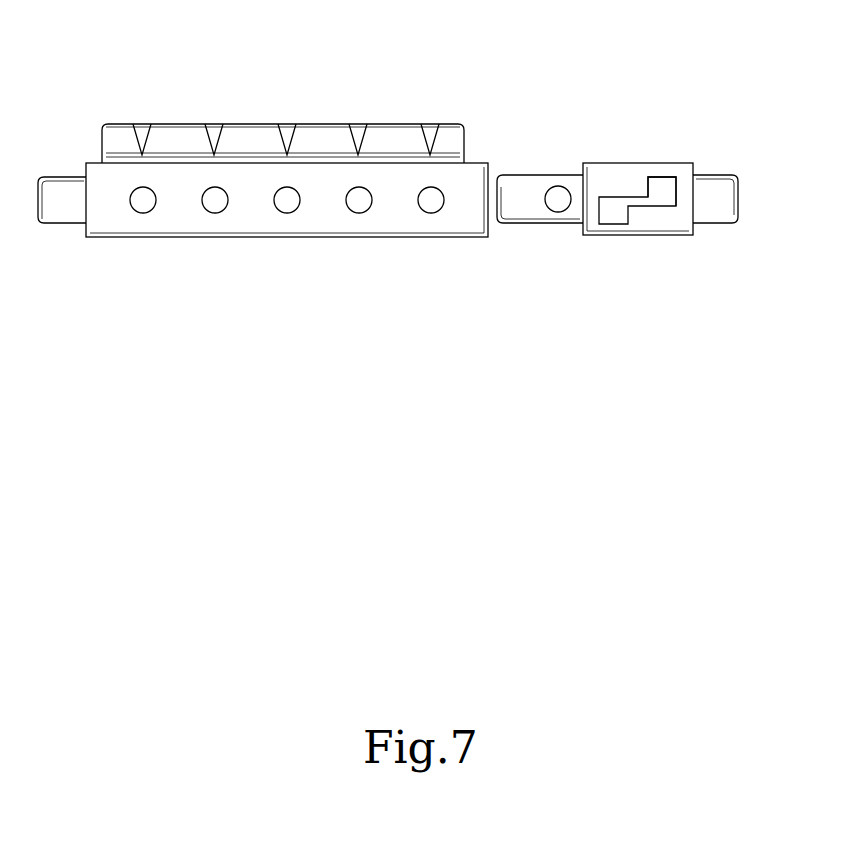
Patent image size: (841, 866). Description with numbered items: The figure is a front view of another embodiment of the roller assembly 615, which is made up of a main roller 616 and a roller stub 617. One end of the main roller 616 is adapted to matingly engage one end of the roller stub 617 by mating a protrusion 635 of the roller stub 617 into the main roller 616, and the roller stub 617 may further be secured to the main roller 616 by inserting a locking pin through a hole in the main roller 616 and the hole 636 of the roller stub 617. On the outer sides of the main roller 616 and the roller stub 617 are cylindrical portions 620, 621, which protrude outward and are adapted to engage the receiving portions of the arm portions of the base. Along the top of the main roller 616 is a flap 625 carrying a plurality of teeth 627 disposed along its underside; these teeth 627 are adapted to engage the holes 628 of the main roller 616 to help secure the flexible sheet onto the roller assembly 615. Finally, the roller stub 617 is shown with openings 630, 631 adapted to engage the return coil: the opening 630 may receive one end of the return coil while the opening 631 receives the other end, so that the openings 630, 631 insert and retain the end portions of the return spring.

The roller assembly 615 is at (132, 54).
The main roller 616 is at (264, 222).
The roller stub 617 is at (667, 226).
The cylindrical portion 620 is at (52, 179).
The cylindrical portion 621 is at (741, 214).
The flap 625 is at (324, 134).
The teeth 627 is at (249, 112).
The holes 628 is at (317, 235).
The opening 630 is at (637, 230).
The opening 631 is at (685, 160).
The protrusion 635 is at (538, 220).
The hole 636 is at (576, 230).